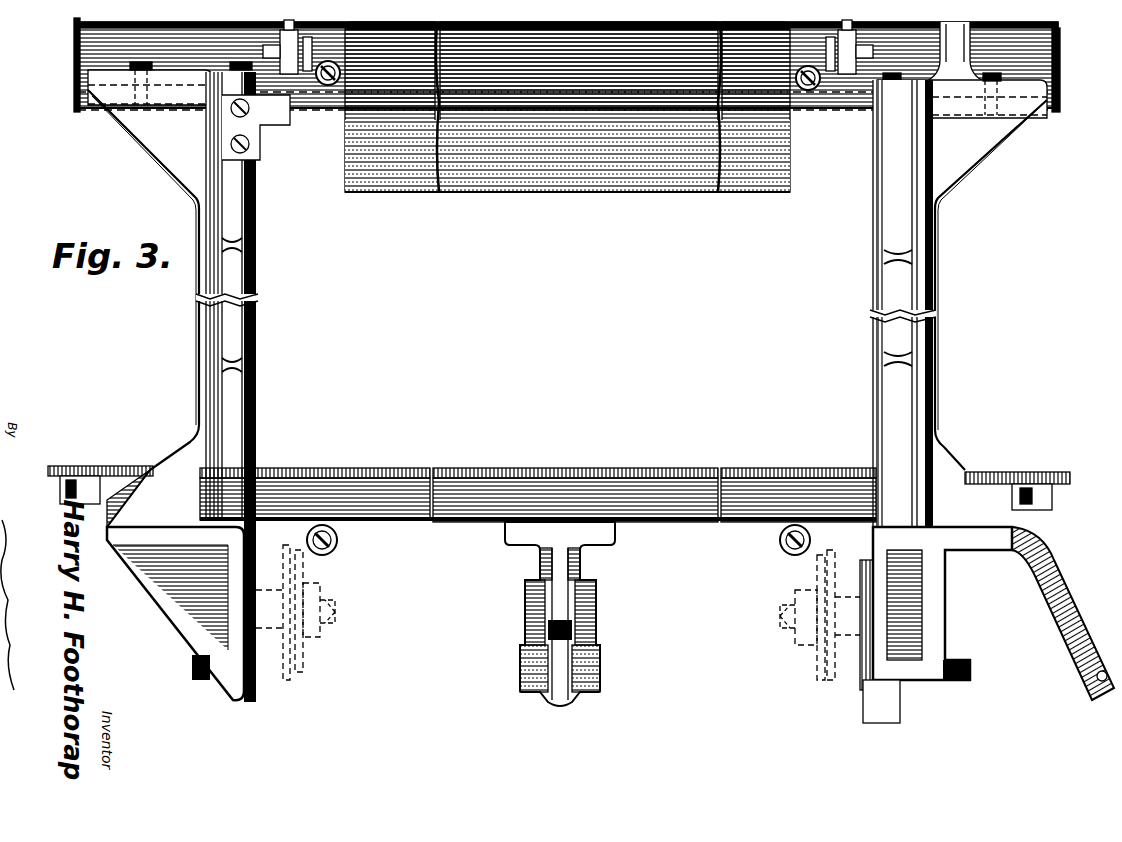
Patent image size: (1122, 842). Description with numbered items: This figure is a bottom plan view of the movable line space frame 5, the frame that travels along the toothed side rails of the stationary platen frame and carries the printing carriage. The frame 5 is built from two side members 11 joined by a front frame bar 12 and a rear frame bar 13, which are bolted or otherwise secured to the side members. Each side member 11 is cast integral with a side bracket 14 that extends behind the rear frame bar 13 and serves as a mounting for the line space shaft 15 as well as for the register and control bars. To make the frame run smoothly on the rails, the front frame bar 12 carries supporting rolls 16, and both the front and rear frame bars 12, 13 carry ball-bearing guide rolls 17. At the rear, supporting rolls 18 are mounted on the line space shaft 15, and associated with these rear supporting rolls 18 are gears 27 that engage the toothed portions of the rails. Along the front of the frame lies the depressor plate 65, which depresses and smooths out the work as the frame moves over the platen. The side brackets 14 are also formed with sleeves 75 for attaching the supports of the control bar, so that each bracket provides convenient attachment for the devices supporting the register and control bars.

The movable line space frame 5 is at (165, 155).
The side members 11 is at (207, 322).
The front frame bar 12 is at (840, 104).
The rear frame bar 13 is at (468, 528).
The side brackets 14 is at (205, 690).
The line space shaft 15 is at (335, 620).
The supporting rolls 16 is at (320, 88).
The guide rolls 17 is at (333, 84).
The rear supporting rolls 18 is at (300, 672).
The gears 27 is at (283, 680).
The depressor plate 65 is at (578, 192).
The sleeves 75 is at (598, 660).